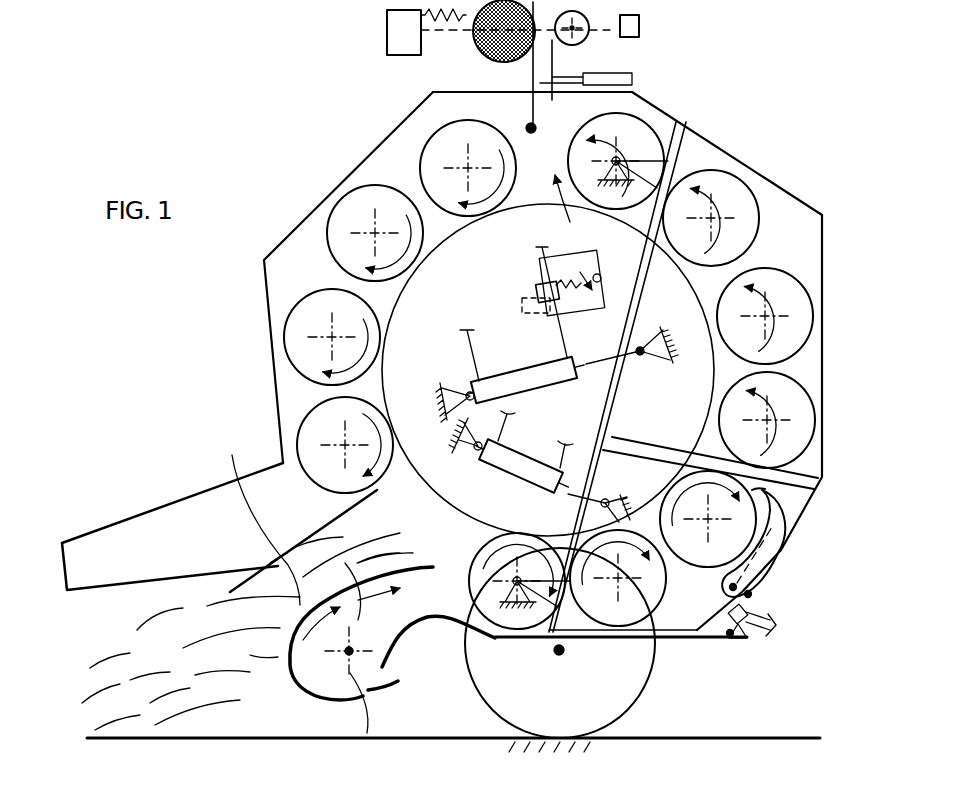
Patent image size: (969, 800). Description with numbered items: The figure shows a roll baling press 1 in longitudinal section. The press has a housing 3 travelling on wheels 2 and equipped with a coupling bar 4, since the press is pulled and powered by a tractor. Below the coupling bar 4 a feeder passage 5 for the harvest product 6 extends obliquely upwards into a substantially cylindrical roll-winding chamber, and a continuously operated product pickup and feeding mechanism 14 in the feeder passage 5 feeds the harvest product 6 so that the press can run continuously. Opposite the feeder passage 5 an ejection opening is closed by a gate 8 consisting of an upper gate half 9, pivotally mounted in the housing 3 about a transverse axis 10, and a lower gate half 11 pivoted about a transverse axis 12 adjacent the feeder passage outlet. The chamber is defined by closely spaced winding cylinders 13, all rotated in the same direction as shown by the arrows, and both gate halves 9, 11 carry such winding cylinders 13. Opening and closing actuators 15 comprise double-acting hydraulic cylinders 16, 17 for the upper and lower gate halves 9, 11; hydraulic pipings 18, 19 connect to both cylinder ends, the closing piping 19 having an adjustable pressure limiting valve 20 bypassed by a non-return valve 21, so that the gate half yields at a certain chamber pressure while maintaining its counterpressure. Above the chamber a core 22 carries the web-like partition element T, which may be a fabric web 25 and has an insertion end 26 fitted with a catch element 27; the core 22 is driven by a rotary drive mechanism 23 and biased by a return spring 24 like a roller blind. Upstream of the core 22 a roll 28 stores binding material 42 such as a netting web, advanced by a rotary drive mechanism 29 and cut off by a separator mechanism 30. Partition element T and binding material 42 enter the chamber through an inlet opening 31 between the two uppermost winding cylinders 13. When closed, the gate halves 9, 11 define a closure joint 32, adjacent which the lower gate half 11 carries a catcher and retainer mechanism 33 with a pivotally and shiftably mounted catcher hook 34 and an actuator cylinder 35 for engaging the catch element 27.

The roll baling press 1 is at (690, 104).
The wheels 2 is at (613, 675).
The housing 3 is at (330, 190).
The coupling bar 4 is at (168, 520).
The feeder passage 5 is at (262, 517).
The harvest product 6 is at (137, 613).
The gate 8 is at (791, 180).
The upper gate half 9 is at (822, 258).
The transverse axis 10 is at (618, 161).
The lower gate half 11 is at (678, 607).
The transverse axis 12 is at (505, 603).
The winding cylinders 13 is at (338, 264).
The product pickup and feeding mechanism 14 is at (320, 700).
The opening and closing actuators 15 is at (468, 372).
The hydraulic cylinder 16 is at (550, 390).
The hydraulic cylinder 17 is at (527, 470).
The hydraulic piping 18 is at (478, 320).
The hydraulic piping 19 is at (542, 247).
The pressure limiting valve 20 is at (540, 290).
The non-return valve 21 is at (600, 276).
The core 22 is at (480, 50).
The rotary drive mechanism 23 is at (387, 31).
The return spring 24 is at (430, 24).
The fabric web 25 is at (531, 110).
The insertion end 26 is at (531, 133).
The catch element 27 is at (538, 128).
The roll 28 is at (588, 32).
The rotary drive mechanism 29 is at (640, 28).
The separator mechanism 30 is at (632, 80).
The inlet opening 31 is at (558, 200).
The closure joint 32 is at (660, 446).
The catcher and retainer mechanism 33 is at (770, 590).
The catcher hook 34 is at (778, 557).
The actuator cylinder 35 is at (743, 638).
The binding material 42 is at (556, 50).
The partition element T is at (533, 78).